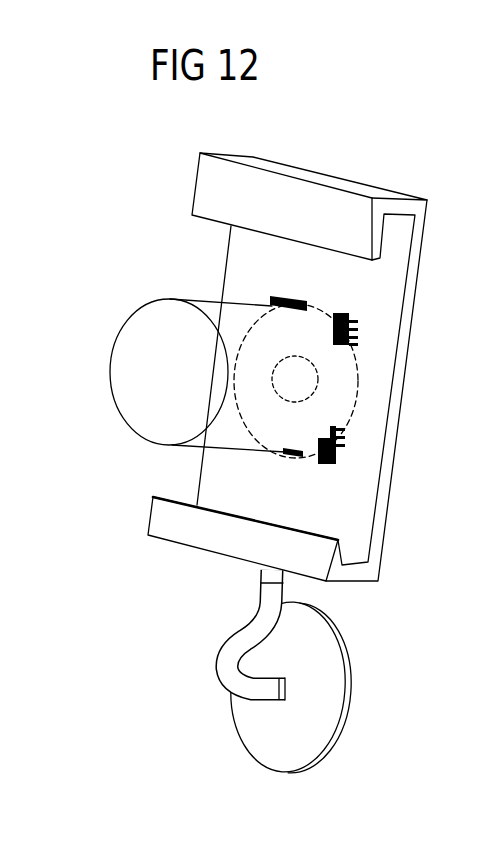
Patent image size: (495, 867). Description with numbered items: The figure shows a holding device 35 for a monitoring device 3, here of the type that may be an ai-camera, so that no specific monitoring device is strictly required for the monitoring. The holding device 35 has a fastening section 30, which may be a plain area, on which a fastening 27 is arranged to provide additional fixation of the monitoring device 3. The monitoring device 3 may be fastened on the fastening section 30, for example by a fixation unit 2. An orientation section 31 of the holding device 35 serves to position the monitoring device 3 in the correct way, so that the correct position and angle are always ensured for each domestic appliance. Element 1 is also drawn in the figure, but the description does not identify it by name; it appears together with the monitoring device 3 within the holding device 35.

The sensor unit 1 is at (297, 379).
The fixation unit 2 is at (283, 752).
The monitoring device 3 is at (140, 373).
The fastening 27 is at (300, 173).
The fastening section 30 is at (264, 258).
The orientation section 31 is at (385, 448).
The holding device 35 is at (373, 167).